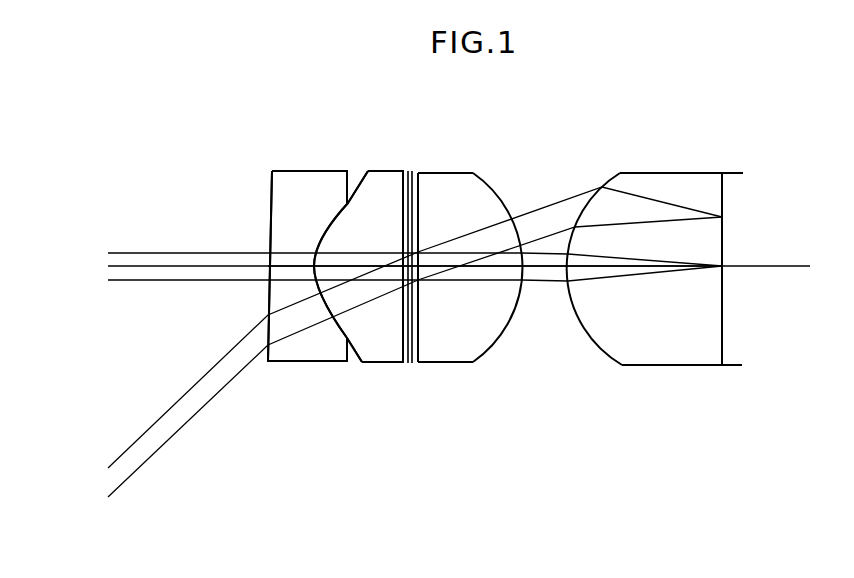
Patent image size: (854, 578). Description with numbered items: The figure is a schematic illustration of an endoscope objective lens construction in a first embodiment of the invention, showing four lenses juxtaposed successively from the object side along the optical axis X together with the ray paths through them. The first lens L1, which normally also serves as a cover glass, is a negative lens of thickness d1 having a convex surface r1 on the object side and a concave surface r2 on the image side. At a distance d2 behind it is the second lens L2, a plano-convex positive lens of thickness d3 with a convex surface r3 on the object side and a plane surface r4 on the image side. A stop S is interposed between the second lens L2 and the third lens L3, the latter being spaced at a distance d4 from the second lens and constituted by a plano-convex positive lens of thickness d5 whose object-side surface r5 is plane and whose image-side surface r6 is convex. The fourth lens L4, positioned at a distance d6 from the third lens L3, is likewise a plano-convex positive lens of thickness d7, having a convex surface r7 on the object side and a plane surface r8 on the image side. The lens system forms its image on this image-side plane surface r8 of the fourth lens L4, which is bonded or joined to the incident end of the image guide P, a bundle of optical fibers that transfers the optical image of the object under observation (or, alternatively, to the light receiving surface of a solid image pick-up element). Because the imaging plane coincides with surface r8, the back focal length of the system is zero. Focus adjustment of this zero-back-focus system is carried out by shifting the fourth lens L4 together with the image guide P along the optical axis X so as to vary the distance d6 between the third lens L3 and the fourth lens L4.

The first lens L1 is at (310, 267).
The second lens L2 is at (364, 267).
The third lens L3 is at (470, 267).
The fourth lens L4 is at (655, 268).
The stop S is at (414, 171).
The image guide P is at (729, 268).
The optical axis X is at (764, 266).
The convex surface r1 is at (268, 362).
The concave surface r2 is at (333, 322).
The convex surface r3 is at (357, 362).
The plane surface r4 is at (410, 363).
The plane surface r5 is at (419, 346).
The convex surface r6 is at (490, 352).
The convex surface r7 is at (610, 356).
The plane surface r8 is at (722, 366).
The thickness d1 is at (286, 264).
The distance d2 is at (318, 260).
The thickness d3 is at (369, 262).
The distance d4 is at (415, 262).
The thickness d5 is at (465, 272).
The distance d6 is at (544, 270).
The thickness d7 is at (613, 270).